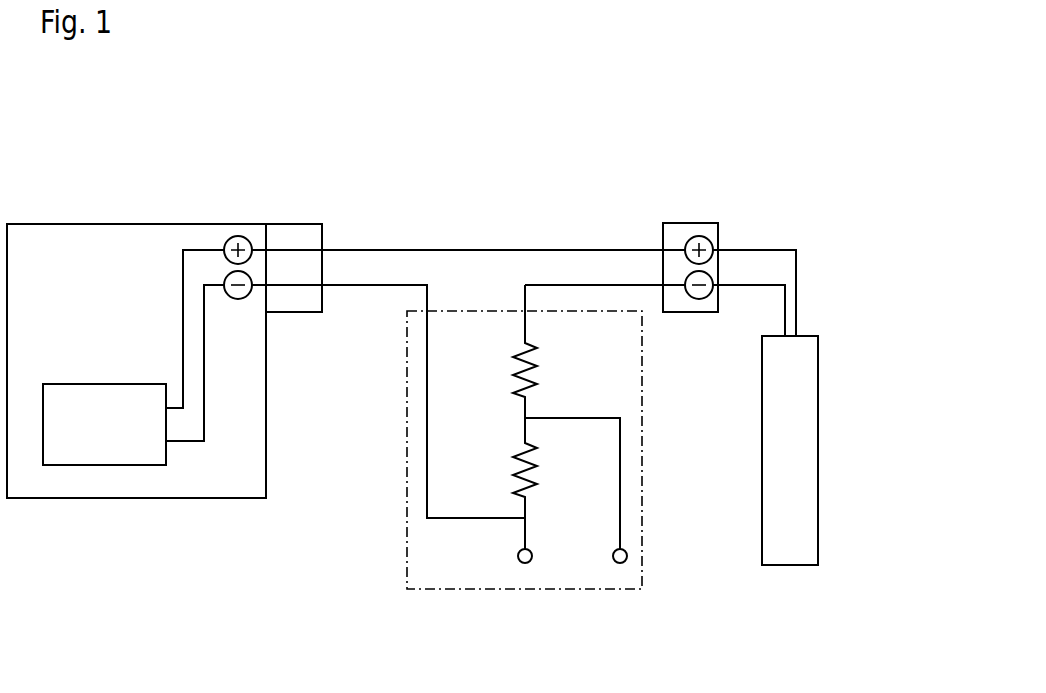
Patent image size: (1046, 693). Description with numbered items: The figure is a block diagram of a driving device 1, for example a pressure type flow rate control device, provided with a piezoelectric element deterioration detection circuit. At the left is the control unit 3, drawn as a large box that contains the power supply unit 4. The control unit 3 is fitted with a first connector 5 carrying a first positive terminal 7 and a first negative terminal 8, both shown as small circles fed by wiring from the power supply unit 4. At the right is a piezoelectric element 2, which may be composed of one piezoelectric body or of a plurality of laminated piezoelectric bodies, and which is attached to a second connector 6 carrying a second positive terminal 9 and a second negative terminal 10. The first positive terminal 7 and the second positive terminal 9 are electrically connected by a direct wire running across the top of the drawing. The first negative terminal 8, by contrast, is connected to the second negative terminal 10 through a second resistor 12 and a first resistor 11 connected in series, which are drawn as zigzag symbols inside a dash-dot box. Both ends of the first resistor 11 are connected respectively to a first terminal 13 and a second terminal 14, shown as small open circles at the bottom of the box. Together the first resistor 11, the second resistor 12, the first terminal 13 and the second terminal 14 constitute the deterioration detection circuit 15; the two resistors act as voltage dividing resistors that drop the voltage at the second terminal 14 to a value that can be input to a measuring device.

The driving device 1 is at (842, 168).
The piezoelectric element 2 is at (818, 450).
The control unit 3 is at (137, 224).
The power supply unit 4 is at (103, 465).
The first connector 5 is at (280, 224).
The second connector 6 is at (690, 223).
The first positive terminal 7 is at (236, 236).
The first negative terminal 8 is at (235, 298).
The second positive terminal 9 is at (700, 236).
The second negative terminal 10 is at (698, 299).
The first resistor 11 is at (522, 460).
The second resistor 12 is at (522, 360).
The first terminal 13 is at (525, 563).
The second terminal 14 is at (620, 563).
The deterioration detection circuit 15 is at (407, 530).